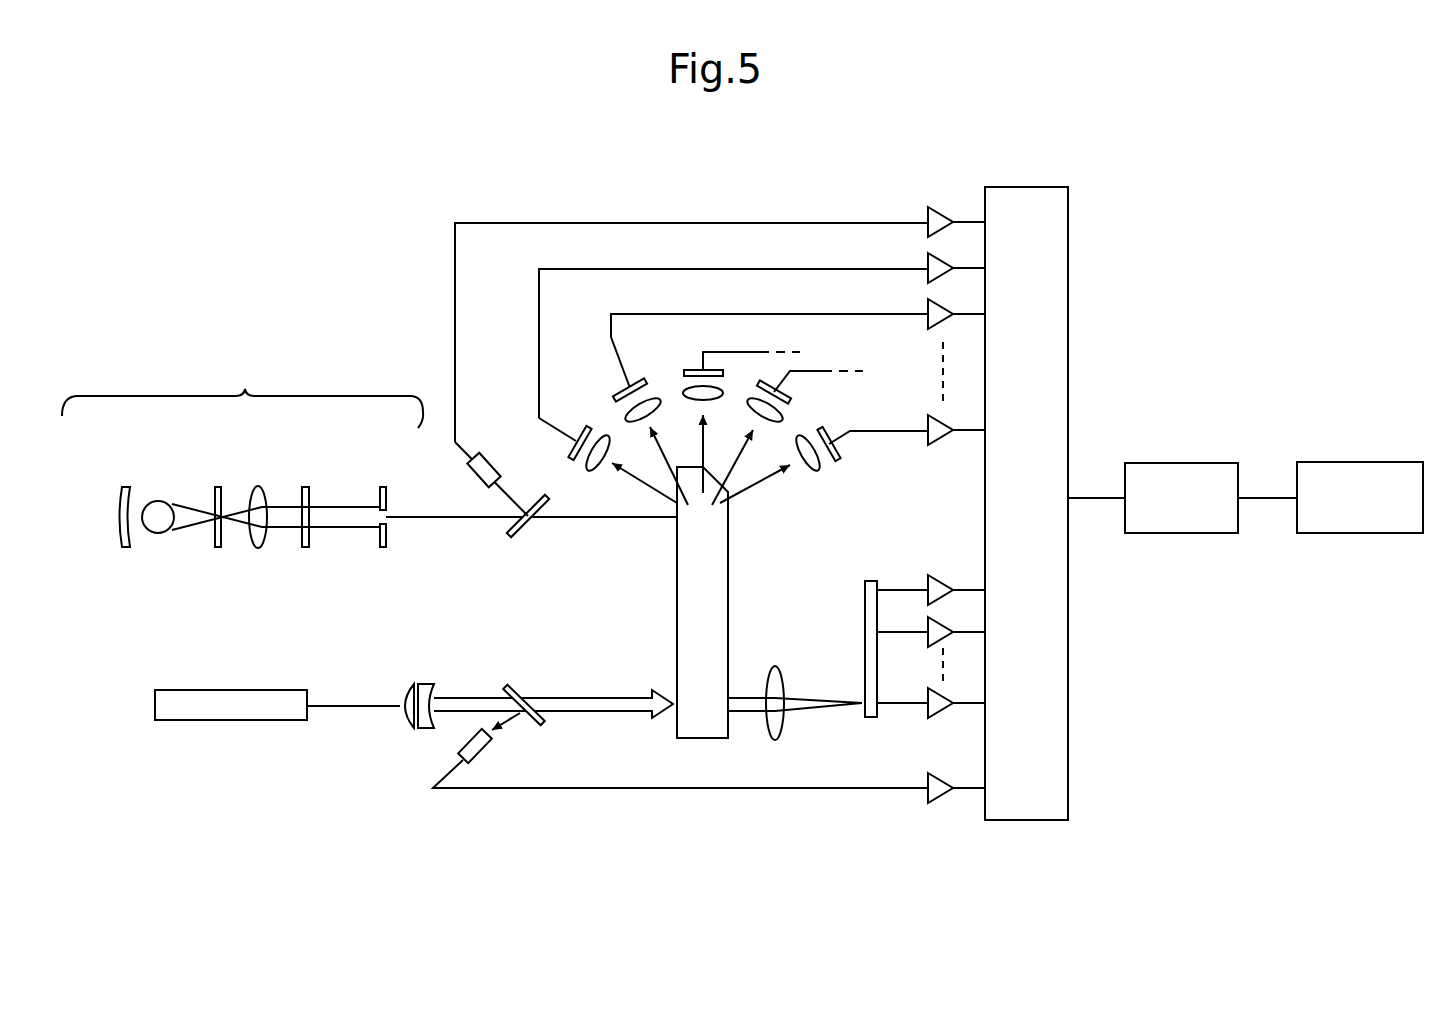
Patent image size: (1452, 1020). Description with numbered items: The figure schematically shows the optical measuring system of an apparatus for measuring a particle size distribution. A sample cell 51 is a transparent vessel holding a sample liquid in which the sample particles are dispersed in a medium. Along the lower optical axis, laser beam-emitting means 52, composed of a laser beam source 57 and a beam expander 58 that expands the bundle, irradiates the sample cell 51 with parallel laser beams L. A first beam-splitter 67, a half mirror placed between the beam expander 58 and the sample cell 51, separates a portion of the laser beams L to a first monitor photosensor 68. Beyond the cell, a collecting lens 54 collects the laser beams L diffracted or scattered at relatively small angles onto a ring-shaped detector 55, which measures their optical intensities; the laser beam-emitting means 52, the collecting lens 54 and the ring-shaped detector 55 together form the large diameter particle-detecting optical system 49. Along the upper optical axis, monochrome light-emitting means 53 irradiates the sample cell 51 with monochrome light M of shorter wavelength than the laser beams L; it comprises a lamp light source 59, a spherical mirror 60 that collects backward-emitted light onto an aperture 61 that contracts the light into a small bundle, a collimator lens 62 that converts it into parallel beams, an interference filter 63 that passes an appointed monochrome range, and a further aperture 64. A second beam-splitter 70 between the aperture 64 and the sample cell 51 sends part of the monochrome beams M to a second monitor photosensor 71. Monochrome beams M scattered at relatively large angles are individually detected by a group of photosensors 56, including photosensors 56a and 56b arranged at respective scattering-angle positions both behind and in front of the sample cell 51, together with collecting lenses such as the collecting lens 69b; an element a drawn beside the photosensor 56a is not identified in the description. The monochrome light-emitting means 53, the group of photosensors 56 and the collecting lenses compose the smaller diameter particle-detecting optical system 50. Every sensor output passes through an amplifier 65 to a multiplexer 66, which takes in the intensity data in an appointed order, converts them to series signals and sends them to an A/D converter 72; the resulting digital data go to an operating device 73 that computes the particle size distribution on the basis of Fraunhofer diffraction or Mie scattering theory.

The large diameter particle-detecting optical system 49 is at (397, 747).
The smaller diameter particle-detecting optical system 50 is at (425, 397).
The sample cell 51 is at (677, 613).
The laser beam-emitting means 52 is at (505, 562).
The monochrome light-emitting means 53 is at (242, 389).
The collecting lens 54 is at (782, 723).
The ring-shaped detector 55 is at (863, 622).
The group of photosensors 56 is at (633, 347).
The photosensor 56a is at (584, 428).
The photosensor 56b is at (740, 342).
The laser beam source 57 is at (275, 690).
The beam expander 58 is at (407, 684).
The lamp light source 59 is at (156, 501).
The spherical mirror 60 is at (122, 490).
The aperture 61 is at (218, 487).
The collimator lens 62 is at (262, 487).
The interference filter 63 is at (306, 487).
The aperture 64 is at (383, 487).
The amplifier 65 is at (938, 218).
The multiplexer 66 is at (1068, 316).
The first beam-splitter 67 is at (515, 687).
The first monitor photosensor 68 is at (488, 757).
The collecting lens 69b is at (652, 400).
The second beam-splitter 70 is at (517, 535).
The second monitor photosensor 71 is at (487, 455).
The A/D converter 72 is at (1168, 462).
The operating device 73 is at (1345, 461).
The monochrome light M is at (445, 517).
The laser beams L is at (342, 706).
The condenser lens a is at (597, 472).